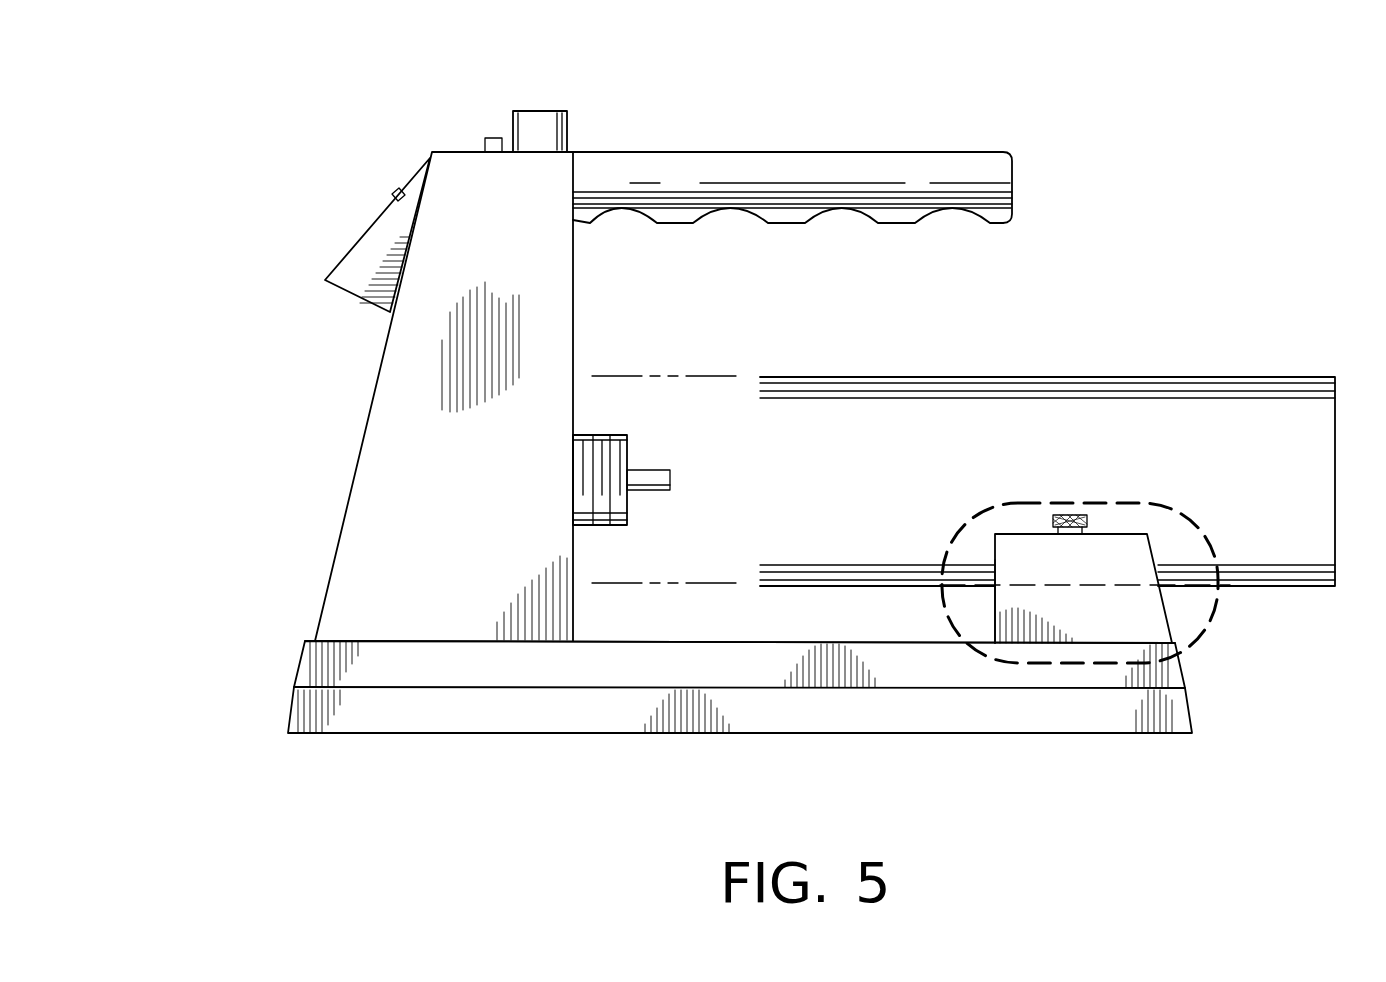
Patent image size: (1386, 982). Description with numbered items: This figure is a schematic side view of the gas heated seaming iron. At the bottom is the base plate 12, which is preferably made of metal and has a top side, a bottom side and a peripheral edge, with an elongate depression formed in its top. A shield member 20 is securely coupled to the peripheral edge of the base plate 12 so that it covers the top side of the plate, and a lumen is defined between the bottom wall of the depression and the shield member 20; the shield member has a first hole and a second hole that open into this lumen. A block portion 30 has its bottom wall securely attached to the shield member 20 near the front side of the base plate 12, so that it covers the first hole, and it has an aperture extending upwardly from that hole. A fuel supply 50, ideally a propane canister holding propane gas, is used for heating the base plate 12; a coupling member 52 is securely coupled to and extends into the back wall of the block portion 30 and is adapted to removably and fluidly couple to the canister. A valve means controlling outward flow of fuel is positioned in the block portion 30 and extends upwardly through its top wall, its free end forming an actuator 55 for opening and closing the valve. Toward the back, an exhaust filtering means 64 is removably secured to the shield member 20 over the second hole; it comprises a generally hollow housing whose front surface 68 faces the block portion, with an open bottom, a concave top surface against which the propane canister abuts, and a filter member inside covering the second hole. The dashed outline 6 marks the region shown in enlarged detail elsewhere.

The detail area of FIG. 6 is at (1207, 625).
The base plate 12 is at (342, 710).
The shield member 20 is at (318, 657).
The block portion 30 is at (380, 500).
The fuel supply 50 is at (1211, 412).
The coupling member 52 is at (620, 463).
The actuator 55 is at (537, 123).
The exhaust filtering means 64 is at (1113, 608).
The front surface 68 is at (993, 602).